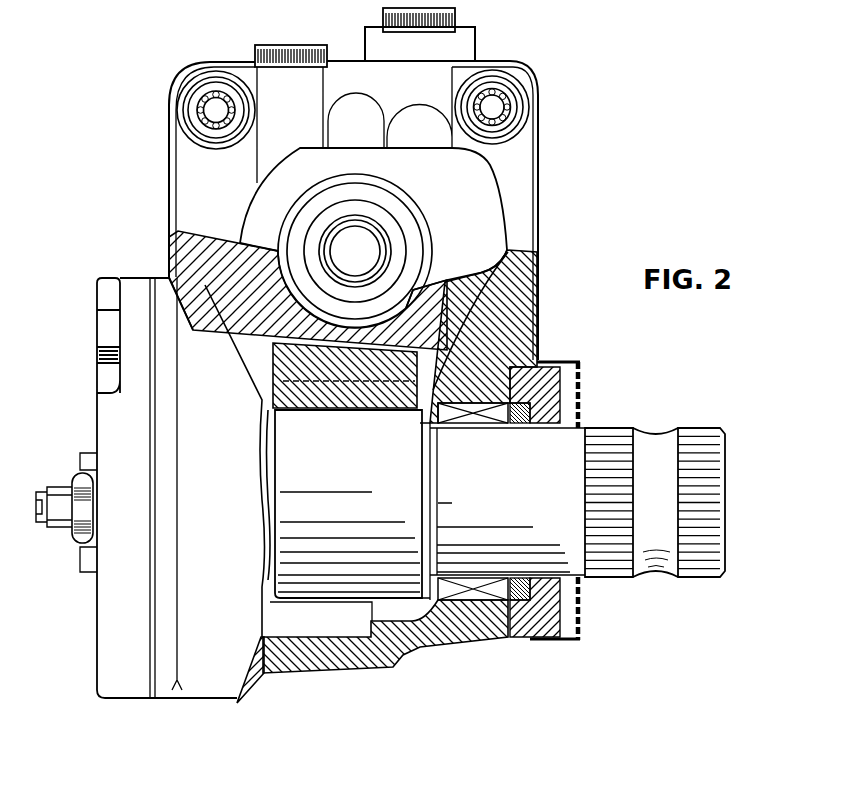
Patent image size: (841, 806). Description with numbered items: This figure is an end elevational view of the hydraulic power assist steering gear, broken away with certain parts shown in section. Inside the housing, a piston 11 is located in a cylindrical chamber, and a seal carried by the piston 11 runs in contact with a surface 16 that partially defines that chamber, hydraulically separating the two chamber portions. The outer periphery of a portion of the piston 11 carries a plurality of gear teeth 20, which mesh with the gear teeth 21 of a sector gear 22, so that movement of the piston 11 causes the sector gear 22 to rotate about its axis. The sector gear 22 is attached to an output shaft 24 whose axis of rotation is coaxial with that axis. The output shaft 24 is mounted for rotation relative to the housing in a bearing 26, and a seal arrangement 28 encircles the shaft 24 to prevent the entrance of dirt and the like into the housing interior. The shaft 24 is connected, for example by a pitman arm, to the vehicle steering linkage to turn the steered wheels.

The piston 11 is at (190, 300).
The surface 16 is at (169, 247).
The gear teeth 20 is at (258, 358).
The gear teeth 21 is at (253, 394).
The sector gear 22 is at (350, 515).
The output shaft 24 is at (615, 470).
The bearing 26 is at (508, 356).
The seal arrangement 28 is at (596, 389).